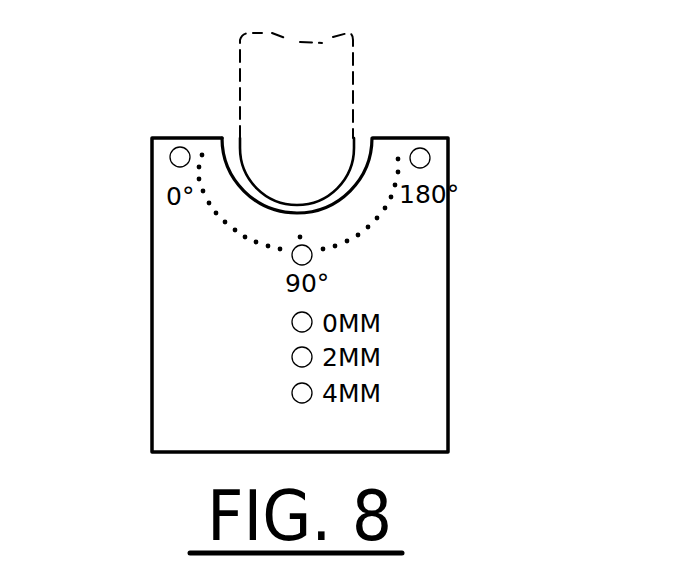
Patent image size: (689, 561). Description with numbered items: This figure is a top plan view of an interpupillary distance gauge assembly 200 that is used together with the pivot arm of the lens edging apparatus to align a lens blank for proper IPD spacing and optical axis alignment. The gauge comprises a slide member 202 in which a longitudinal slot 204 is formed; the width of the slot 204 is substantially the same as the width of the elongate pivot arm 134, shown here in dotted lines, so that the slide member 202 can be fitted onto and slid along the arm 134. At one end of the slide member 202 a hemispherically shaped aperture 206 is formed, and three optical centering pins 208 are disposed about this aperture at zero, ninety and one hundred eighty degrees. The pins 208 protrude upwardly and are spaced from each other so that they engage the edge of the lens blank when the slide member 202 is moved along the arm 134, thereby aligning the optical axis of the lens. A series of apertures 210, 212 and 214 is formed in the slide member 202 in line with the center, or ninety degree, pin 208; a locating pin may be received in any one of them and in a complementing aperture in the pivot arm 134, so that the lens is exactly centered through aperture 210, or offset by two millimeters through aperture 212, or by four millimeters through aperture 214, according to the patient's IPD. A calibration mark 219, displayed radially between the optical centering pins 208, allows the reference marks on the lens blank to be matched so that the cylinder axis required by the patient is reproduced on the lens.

The interpupillary distance gauge assembly 200 is at (116, 241).
The slide member 202 is at (430, 389).
The longitudinal slot 204 is at (353, 162).
The hemispherically shaped aperture 206 is at (255, 201).
The elongate pivot arm 134 is at (353, 78).
The optical centering pins 208 is at (171, 162).
The aperture 210 is at (292, 322).
The aperture 212 is at (292, 358).
The aperture 214 is at (292, 397).
The calibration mark 219 is at (357, 226).